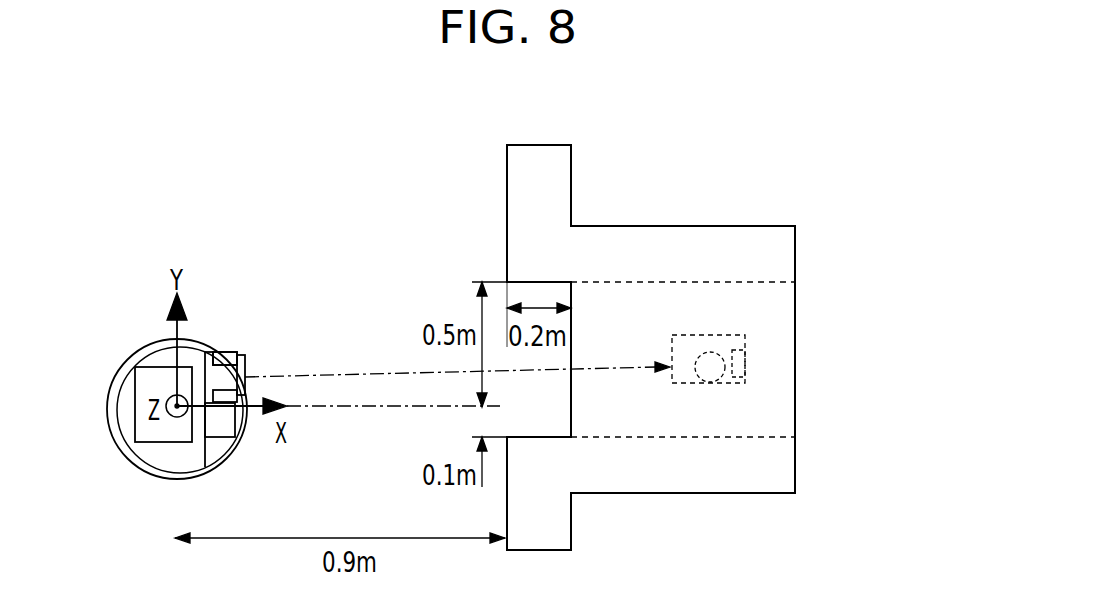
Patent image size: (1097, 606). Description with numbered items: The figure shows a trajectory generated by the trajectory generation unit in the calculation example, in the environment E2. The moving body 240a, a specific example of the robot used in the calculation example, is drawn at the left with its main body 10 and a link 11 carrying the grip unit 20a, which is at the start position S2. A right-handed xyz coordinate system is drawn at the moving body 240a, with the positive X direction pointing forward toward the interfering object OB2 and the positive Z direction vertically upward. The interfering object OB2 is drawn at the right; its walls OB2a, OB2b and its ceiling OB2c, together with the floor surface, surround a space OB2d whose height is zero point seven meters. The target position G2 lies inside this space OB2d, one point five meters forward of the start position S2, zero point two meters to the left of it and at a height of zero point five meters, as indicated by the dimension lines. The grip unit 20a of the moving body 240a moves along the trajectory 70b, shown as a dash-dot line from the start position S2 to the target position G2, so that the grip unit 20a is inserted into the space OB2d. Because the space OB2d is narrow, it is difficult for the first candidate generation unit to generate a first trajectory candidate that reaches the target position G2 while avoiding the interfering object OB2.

The main body 10 is at (108, 372).
The moving body 240a is at (212, 282).
The start position S2 is at (223, 351).
The grip unit 20a is at (238, 352).
The link 11 is at (246, 366).
The trajectory 70b is at (367, 367).
The interfering object OB2 is at (755, 187).
The wall OB2a is at (572, 187).
The wall OB2b is at (571, 525).
The ceiling OB2c is at (796, 297).
The space OB2d is at (725, 410).
The target position G2 is at (750, 372).
The environment E2 is at (930, 84).